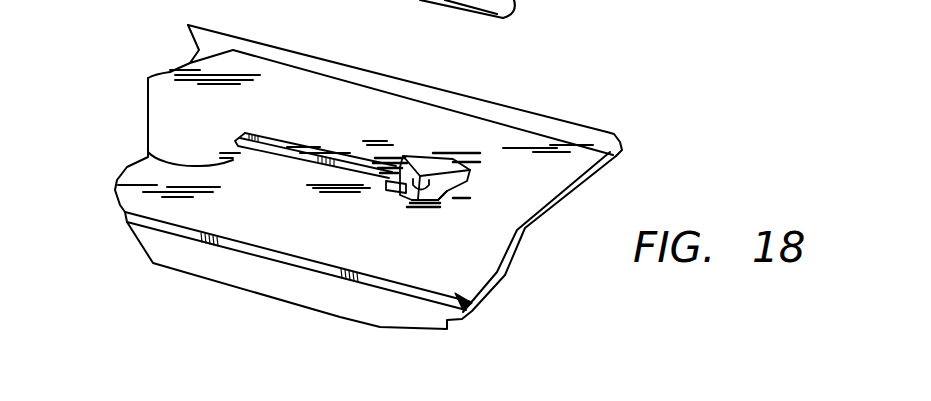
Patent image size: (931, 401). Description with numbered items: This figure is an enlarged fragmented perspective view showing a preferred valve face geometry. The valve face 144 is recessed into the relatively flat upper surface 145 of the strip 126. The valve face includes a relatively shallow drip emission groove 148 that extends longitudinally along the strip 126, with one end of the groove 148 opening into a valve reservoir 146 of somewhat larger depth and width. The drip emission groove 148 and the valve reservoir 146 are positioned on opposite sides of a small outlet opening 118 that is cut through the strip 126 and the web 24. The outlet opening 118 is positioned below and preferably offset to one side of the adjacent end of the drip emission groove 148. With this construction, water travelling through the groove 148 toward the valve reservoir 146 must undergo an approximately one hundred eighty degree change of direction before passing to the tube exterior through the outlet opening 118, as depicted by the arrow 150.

The web 24 is at (637, 112).
The outlet opening 118 is at (422, 157).
The strip 126 is at (173, 87).
The valve face 144 is at (150, 147).
The upper surface 145 is at (350, 97).
The valve reservoir 146 is at (440, 210).
The drip emission groove 148 is at (265, 140).
The arrow 150 is at (398, 203).